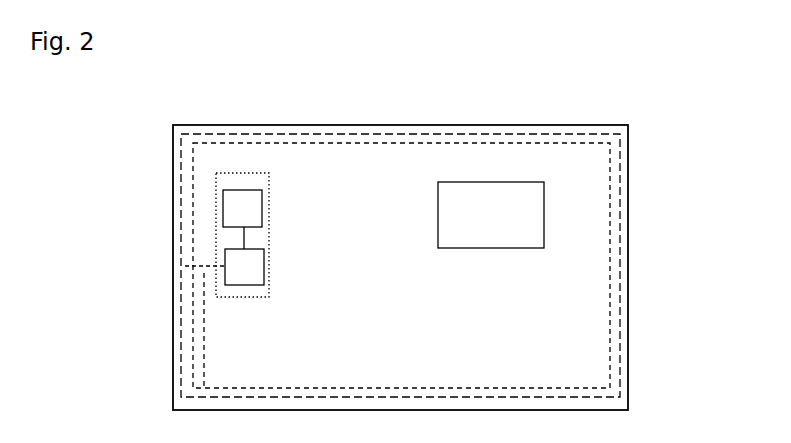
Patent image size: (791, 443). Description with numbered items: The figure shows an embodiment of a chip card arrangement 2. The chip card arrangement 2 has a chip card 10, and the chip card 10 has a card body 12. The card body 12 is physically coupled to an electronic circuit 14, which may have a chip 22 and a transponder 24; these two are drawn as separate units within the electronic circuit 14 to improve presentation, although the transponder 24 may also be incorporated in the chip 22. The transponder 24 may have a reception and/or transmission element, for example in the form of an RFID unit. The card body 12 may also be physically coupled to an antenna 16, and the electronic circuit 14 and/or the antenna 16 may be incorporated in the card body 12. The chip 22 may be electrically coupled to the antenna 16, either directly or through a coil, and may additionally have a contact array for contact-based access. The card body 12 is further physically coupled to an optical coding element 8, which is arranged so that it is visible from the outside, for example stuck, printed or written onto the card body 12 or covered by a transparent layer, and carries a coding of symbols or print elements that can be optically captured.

The chip card arrangement 2 is at (672, 318).
The optical coding element 8 is at (487, 248).
The chip card 10 is at (628, 143).
The card body 12 is at (628, 230).
The electronic circuit 14 is at (216, 240).
The antenna 16 is at (203, 349).
The chip 22 is at (264, 272).
The transponder 24 is at (262, 225).